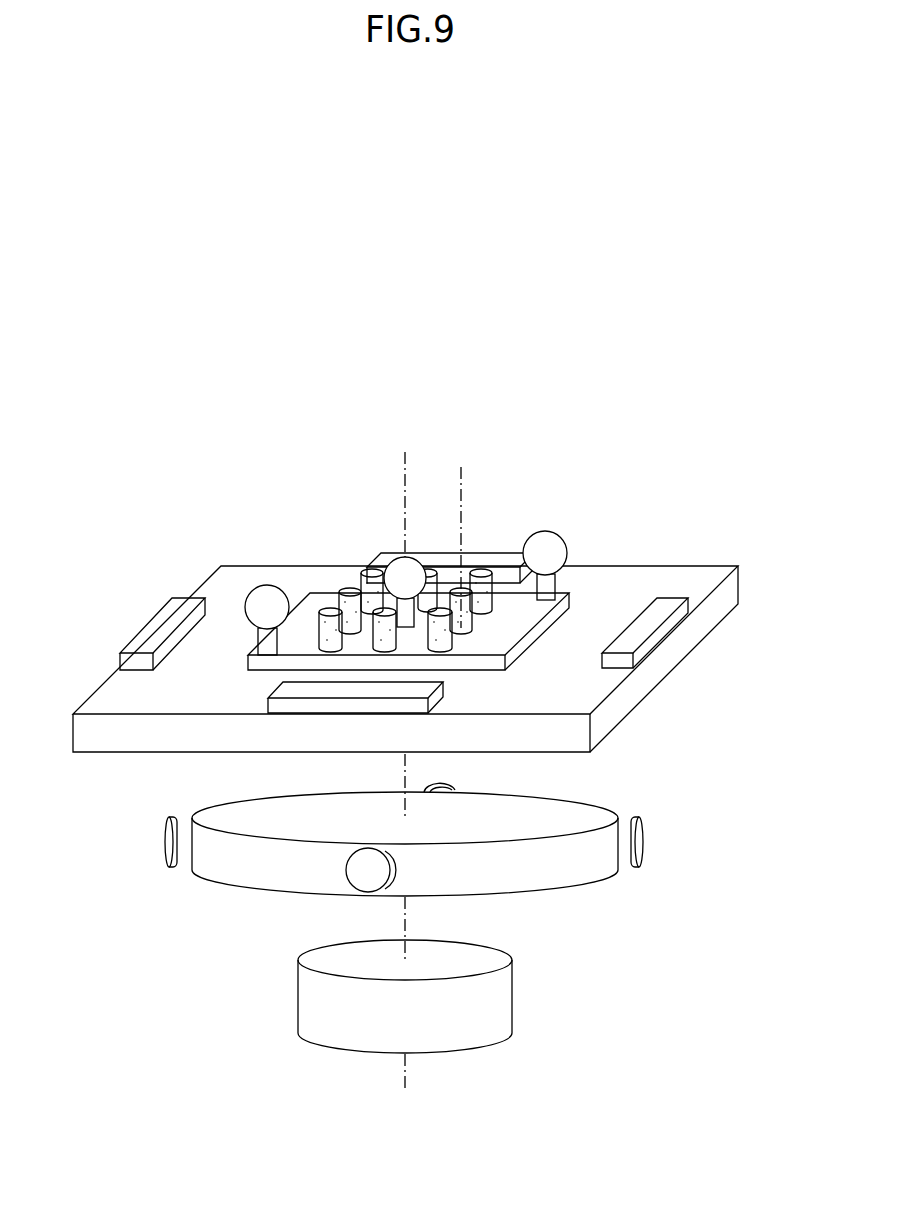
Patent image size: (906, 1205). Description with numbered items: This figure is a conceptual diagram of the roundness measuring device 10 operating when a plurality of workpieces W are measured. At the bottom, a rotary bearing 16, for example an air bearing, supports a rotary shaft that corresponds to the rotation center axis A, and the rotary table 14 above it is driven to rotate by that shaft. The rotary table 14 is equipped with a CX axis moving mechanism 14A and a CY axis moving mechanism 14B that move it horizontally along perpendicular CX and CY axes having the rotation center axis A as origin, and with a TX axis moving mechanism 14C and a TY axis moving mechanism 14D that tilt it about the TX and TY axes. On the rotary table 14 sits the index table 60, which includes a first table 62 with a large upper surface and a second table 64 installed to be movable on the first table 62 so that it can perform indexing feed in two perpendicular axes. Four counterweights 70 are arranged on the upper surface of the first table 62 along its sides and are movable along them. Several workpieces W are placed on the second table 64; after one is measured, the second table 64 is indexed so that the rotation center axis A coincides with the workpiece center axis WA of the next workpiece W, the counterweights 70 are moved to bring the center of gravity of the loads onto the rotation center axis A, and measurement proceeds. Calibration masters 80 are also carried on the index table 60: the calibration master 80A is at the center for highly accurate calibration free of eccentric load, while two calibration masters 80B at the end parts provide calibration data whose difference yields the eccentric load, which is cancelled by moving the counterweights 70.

The machine tool 10 is at (654, 419).
The rotary table 14 is at (612, 798).
The CX axis moving mechanism 14A is at (643, 838).
The CY axis moving mechanism 14B is at (372, 887).
The TX axis moving mechanism 14C is at (165, 843).
The TY axis moving mechanism 14D is at (440, 788).
The rotary bearing 16 is at (509, 1000).
The index table 60 is at (700, 553).
The first table 62 is at (630, 583).
The second table 64 is at (323, 603).
The counterweight 70 is at (430, 560).
The calibration master 80 is at (544, 374).
The calibration master 80A is at (397, 567).
The calibration master 80B is at (260, 592).
The workpiece W is at (472, 622).
The workpiece center axis WA is at (461, 532).
The rotation center axis A is at (406, 756).